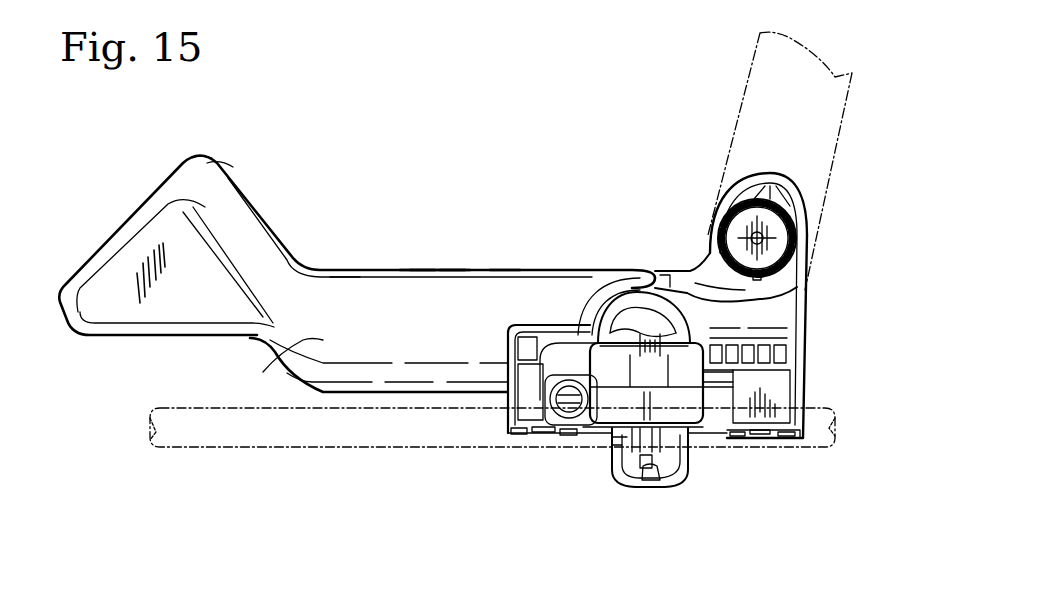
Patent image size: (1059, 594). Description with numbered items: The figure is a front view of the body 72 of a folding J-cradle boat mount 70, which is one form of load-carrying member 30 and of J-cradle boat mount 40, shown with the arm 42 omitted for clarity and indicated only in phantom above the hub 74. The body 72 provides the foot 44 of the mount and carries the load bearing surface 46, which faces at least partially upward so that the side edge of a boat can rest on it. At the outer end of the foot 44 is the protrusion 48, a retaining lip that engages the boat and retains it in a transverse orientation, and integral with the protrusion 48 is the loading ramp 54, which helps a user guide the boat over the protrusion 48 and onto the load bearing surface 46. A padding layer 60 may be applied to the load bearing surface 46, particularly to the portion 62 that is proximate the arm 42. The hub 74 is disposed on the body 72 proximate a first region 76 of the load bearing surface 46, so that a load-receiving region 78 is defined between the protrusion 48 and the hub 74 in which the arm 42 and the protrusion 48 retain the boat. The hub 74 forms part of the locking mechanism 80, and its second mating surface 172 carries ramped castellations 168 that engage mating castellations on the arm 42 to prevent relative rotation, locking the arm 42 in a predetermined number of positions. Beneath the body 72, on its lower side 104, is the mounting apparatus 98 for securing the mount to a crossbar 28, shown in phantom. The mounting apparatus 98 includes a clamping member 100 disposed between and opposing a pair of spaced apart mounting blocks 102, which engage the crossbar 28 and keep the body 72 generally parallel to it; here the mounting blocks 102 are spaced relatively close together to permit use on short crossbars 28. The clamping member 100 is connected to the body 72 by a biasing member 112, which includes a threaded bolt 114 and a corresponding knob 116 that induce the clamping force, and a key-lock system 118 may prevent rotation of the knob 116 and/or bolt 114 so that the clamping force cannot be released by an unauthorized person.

The load-carrying member 30 is at (105, 140).
The J-cradle boat mount 40 is at (116, 169).
The folding J-cradle boat mount 70 is at (125, 196).
The loading ramp 54 is at (100, 236).
The protrusion 48 is at (211, 147).
The body 72 is at (276, 362).
The padding layer 60 is at (373, 269).
The foot 44 is at (459, 246).
The load bearing surface 46 is at (423, 264).
The load-receiving region 78 is at (455, 203).
The portion of the load bearing surface 62 is at (506, 263).
The first region 76 is at (595, 261).
The lower side 104 is at (479, 466).
The key-lock system 118 is at (567, 391).
The knob 116 is at (643, 310).
The arm 42 is at (740, 101).
The hub 74 is at (813, 194).
The ramped castellations 168 is at (718, 249).
The second mating surface 172 is at (776, 288).
The locking mechanism 80 is at (816, 255).
The mounting blocks 102 is at (547, 444).
The mounting apparatus 98 is at (605, 514).
The clamping member 100 is at (641, 490).
The biasing member 112 is at (600, 442).
The threaded bolt 114 is at (662, 446).
The crossbar 28 is at (769, 455).